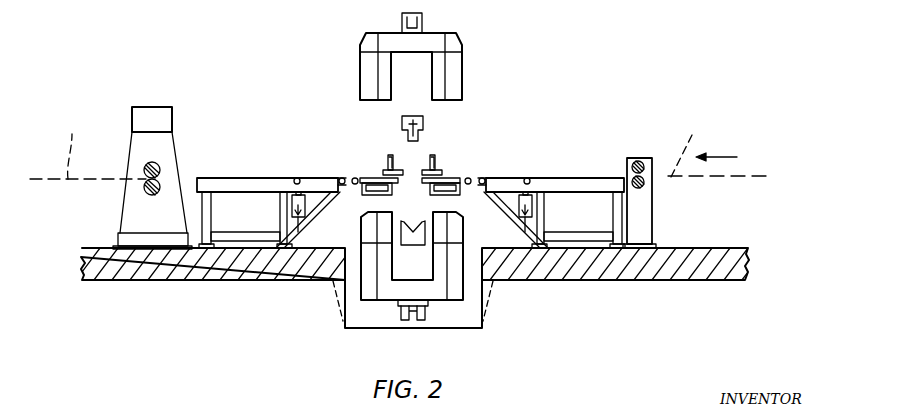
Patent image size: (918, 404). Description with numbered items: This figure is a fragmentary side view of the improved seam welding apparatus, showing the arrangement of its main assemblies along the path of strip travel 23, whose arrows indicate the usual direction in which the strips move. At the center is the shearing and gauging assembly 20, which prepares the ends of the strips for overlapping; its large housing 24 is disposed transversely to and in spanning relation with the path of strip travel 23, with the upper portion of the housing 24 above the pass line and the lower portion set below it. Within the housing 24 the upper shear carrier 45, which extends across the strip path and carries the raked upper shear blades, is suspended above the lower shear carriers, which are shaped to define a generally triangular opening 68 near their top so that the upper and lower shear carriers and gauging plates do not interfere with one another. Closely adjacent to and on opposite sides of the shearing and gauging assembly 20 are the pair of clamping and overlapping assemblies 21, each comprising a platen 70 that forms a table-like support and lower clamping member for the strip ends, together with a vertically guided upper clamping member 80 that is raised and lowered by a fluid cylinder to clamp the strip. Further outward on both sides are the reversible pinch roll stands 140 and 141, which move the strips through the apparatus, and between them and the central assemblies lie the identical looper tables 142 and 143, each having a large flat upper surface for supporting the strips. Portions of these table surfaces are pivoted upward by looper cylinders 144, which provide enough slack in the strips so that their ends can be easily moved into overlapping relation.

The shearing and gauging assembly 20 is at (486, 86).
The clamping and overlapping assemblies 21 is at (372, 153).
The path of strip travel 23 is at (401, 146).
The housing 24 is at (372, 63).
The upper shear carrier 45 is at (414, 117).
The triangular opening 68 is at (412, 247).
The platen 70 is at (362, 178).
The upper clamping member 80 is at (390, 155).
The reversible pinch roll stand 140 is at (155, 112).
The reversible pinch roll stand 141 is at (634, 158).
The looper table 142 is at (228, 178).
The looper table 143 is at (587, 186).
The looper cylinders 144 is at (283, 246).